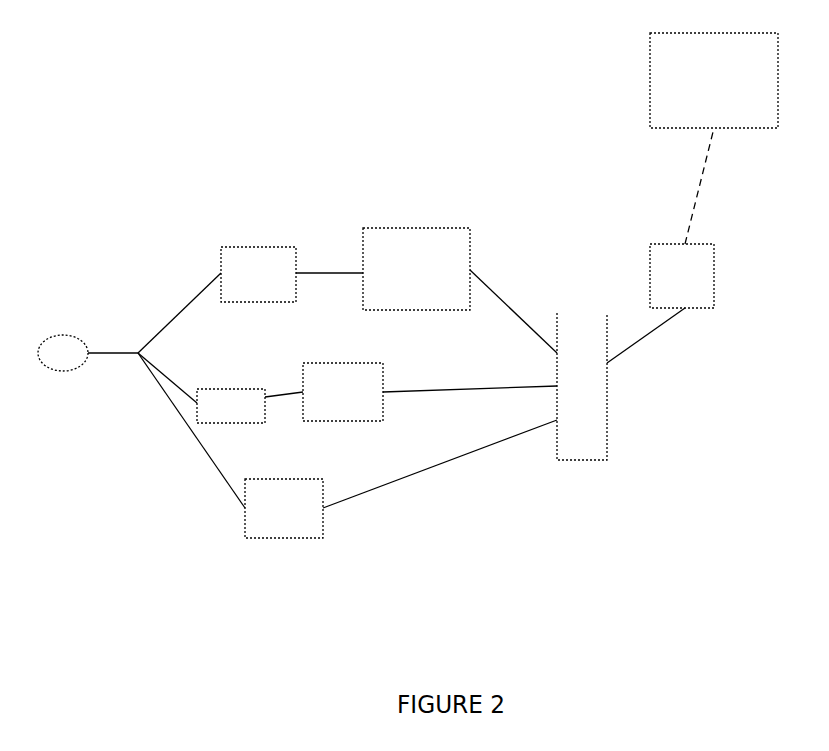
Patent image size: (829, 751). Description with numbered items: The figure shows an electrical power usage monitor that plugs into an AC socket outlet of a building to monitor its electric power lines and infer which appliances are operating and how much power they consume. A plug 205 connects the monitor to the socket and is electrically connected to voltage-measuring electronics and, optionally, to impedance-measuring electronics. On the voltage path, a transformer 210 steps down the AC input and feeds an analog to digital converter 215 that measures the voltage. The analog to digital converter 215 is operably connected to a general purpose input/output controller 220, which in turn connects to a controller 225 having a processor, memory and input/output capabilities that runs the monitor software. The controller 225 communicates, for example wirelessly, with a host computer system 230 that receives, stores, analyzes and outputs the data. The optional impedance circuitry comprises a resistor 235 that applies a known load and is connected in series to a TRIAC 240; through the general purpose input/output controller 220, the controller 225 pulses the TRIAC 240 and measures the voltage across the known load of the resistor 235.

The plug 205 is at (63, 353).
The transformer 210 is at (258, 274).
The analog to digital converter 215 is at (416, 269).
The general purpose input/output controller 220 is at (582, 386).
The controller 225 is at (682, 276).
The host computer system 230 is at (714, 80).
The resistor 235 is at (231, 406).
The TRIAC 240 is at (314, 450).